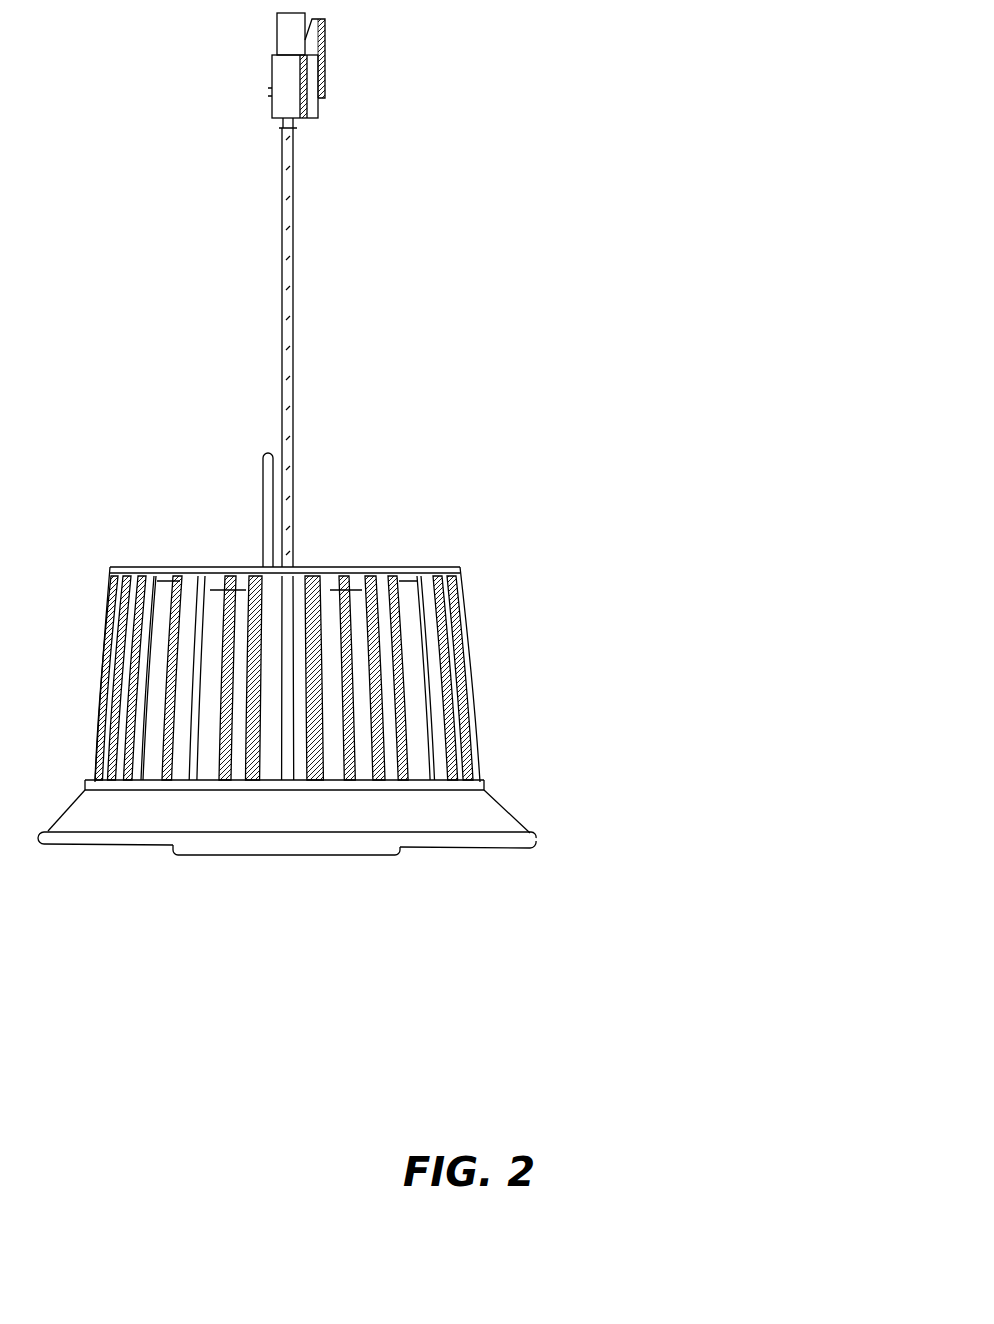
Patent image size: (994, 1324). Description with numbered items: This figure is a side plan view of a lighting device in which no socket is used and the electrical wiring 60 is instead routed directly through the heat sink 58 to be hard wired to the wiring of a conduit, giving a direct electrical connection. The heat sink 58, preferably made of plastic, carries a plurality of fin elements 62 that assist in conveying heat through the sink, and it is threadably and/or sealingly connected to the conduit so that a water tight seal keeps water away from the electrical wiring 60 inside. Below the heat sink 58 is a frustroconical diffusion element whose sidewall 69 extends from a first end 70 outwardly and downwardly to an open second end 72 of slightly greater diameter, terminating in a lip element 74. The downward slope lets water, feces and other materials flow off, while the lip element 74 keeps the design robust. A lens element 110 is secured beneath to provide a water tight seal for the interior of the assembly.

The heat sink 58 is at (430, 630).
The electrical wiring 60 is at (293, 271).
The fin elements 62 is at (375, 645).
The sidewall 69 is at (495, 824).
The first end 70 is at (478, 778).
The open second end 72 is at (537, 842).
The lip element 74 is at (473, 823).
The lens element 110 is at (343, 856).